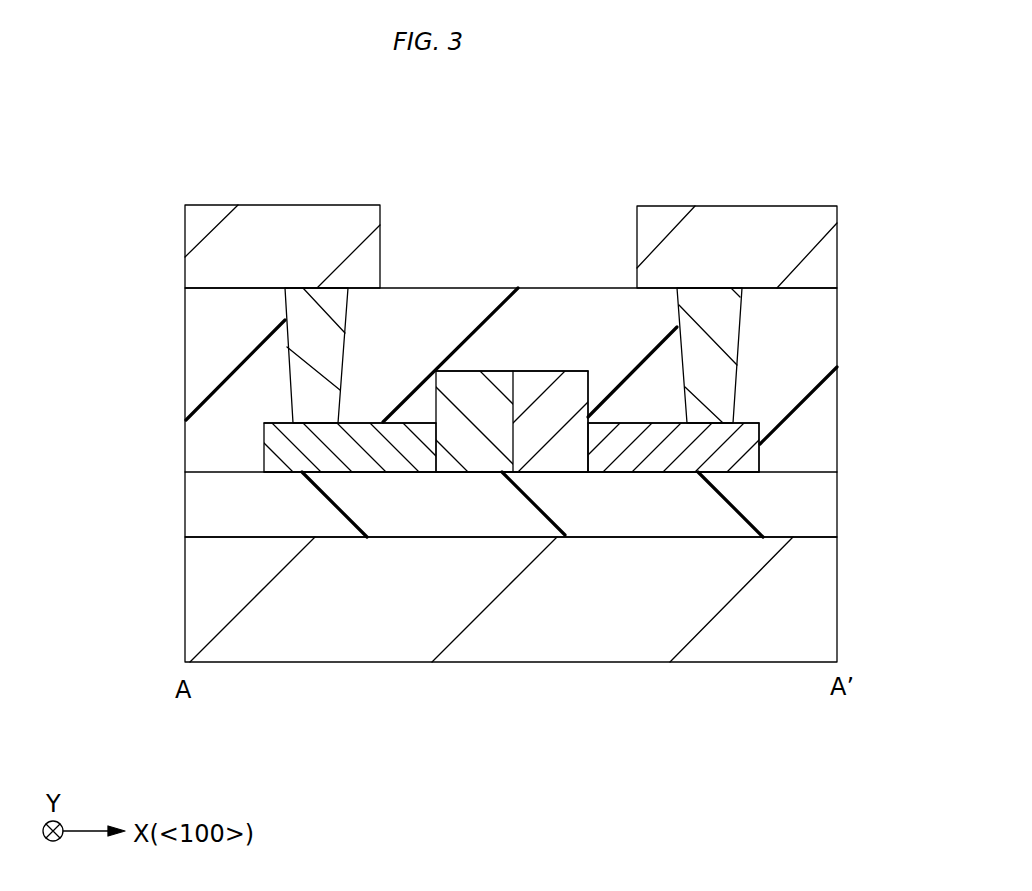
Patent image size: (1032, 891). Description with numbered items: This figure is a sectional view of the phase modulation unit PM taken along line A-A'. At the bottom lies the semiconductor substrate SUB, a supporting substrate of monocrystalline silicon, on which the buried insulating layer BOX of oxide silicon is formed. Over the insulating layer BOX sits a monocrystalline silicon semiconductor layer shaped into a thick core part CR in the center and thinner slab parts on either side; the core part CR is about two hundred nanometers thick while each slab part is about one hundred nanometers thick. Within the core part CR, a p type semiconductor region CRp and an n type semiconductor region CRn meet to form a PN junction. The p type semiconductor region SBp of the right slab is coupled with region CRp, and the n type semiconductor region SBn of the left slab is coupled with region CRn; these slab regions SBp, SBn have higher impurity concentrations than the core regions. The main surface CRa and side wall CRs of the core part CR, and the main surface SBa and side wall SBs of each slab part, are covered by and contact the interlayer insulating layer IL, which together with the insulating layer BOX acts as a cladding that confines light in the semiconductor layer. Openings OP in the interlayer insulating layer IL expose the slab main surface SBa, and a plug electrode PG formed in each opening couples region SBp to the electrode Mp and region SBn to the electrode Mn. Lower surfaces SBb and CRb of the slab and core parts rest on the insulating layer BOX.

The electrode Mn is at (292, 220).
The electrode Mp is at (740, 220).
The phase modulation unit PM is at (888, 143).
The plug electrode PG is at (297, 313).
The interlayer insulating layer IL is at (207, 370).
The opening OP is at (724, 381).
The side wall of slab part SBs is at (760, 452).
The insulating layer BOX is at (207, 503).
The semiconductor substrate SUB is at (207, 591).
The main surface of slab part SBa is at (405, 423).
The semiconductor layer lower surface SBb is at (397, 472).
The n type semiconductor region SBn is at (330, 462).
The p type semiconductor region SBp is at (743, 462).
The core part CR is at (493, 567).
The n type semiconductor region CRn is at (477, 453).
The p type semiconductor region CRp is at (545, 453).
The main surface of core part CRa is at (478, 355).
The crystal region lower surface CRb is at (568, 470).
The side wall of core part CRs is at (590, 380).